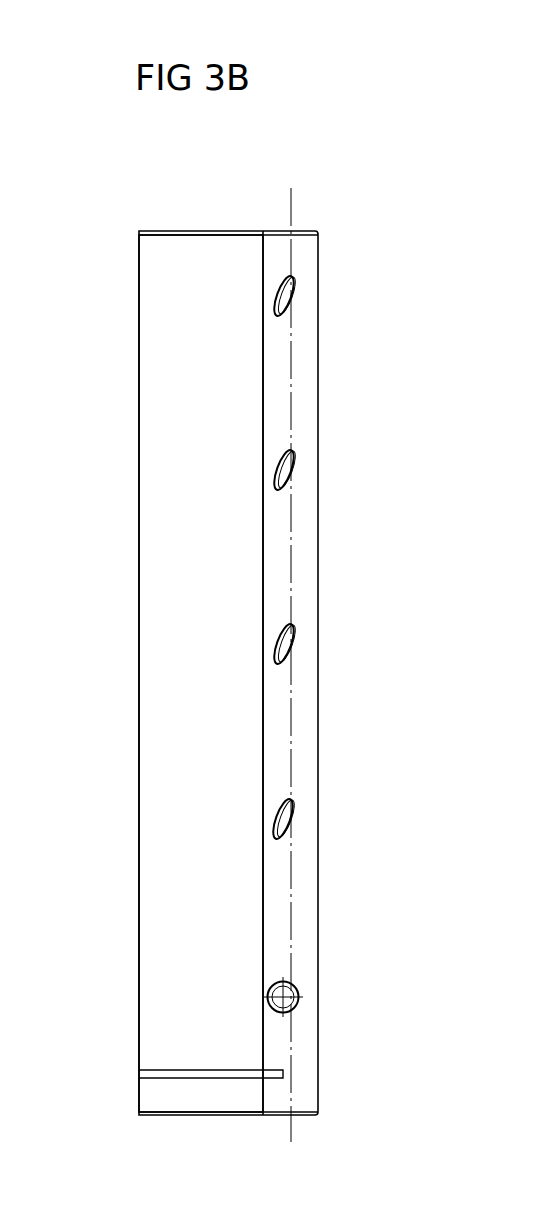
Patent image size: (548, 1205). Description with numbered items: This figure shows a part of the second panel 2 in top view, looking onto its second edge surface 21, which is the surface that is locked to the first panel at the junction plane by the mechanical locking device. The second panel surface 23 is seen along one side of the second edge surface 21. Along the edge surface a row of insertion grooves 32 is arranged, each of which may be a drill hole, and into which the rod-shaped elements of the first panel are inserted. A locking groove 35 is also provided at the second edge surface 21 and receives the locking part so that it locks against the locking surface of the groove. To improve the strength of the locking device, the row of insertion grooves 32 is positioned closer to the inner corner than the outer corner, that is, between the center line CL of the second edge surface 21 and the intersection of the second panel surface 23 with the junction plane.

The second panel 2 is at (230, 226).
The second edge surface 21 is at (307, 935).
The second panel surface 23 is at (165, 454).
The insertion groove 32 is at (280, 822).
The locking groove 35 is at (300, 997).